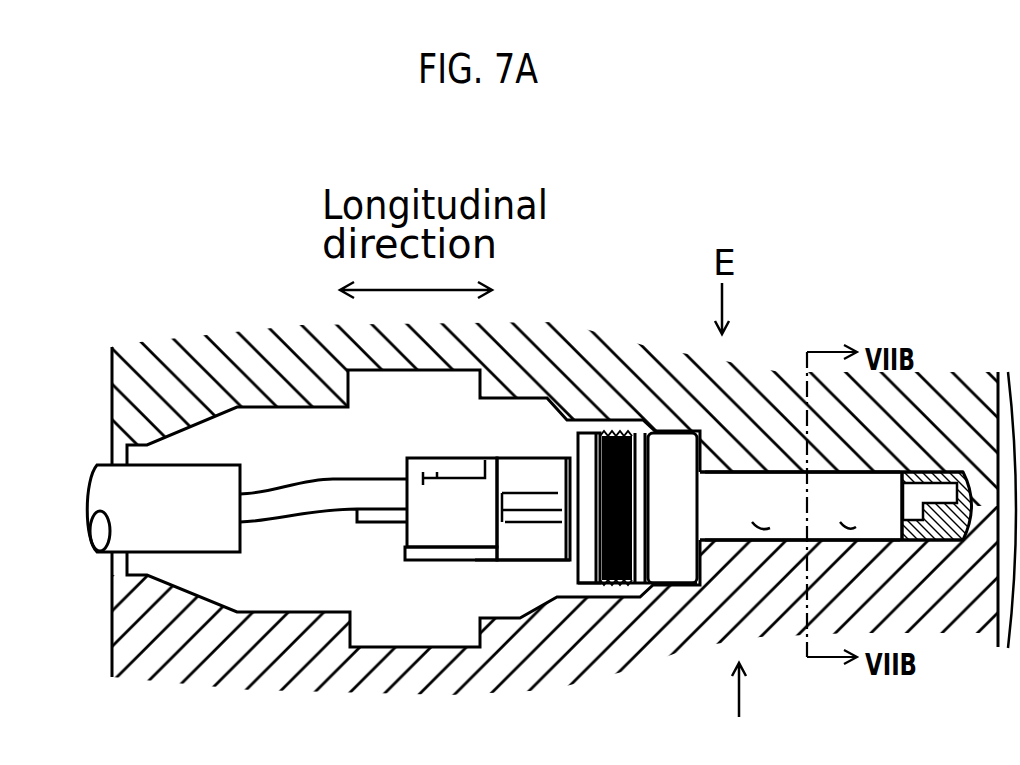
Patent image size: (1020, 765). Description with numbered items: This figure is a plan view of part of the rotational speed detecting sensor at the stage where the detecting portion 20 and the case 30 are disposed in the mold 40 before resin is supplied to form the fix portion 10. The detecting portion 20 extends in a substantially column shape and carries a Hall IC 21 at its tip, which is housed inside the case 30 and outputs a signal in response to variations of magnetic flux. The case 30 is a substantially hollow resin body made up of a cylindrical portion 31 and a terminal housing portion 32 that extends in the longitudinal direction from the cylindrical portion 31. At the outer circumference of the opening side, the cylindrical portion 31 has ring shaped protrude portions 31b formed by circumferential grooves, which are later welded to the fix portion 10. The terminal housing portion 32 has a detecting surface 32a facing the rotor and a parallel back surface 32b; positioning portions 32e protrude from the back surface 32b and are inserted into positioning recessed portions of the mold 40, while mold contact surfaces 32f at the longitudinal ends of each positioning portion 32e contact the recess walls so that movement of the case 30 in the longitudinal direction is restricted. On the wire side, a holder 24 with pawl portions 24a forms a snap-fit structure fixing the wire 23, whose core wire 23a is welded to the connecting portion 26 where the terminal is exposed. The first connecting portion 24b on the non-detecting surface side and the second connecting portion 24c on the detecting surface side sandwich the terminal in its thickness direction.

The fix portion 10 is at (114, 588).
The detecting portion 20 is at (252, 494).
The Hall IC 21 is at (951, 481).
The wire 23 is at (263, 522).
The core wire 23a is at (535, 493).
The holder 24 is at (428, 546).
The pawl portions 24a is at (423, 478).
The first connecting portion 24b is at (539, 546).
The second connecting portion 24c is at (502, 461).
The connecting portion 26 is at (478, 562).
The case 30 is at (832, 471).
The cylindrical portion 31 is at (672, 432).
The ring shaped protrude portions 31b is at (625, 584).
The terminal housing portion 32 is at (873, 466).
The detecting surface 32a is at (732, 471).
The back surface 32b is at (730, 541).
The positioning portions 32e is at (826, 543).
The mold contact surfaces 32f is at (801, 509).
The mold 40 is at (114, 428).